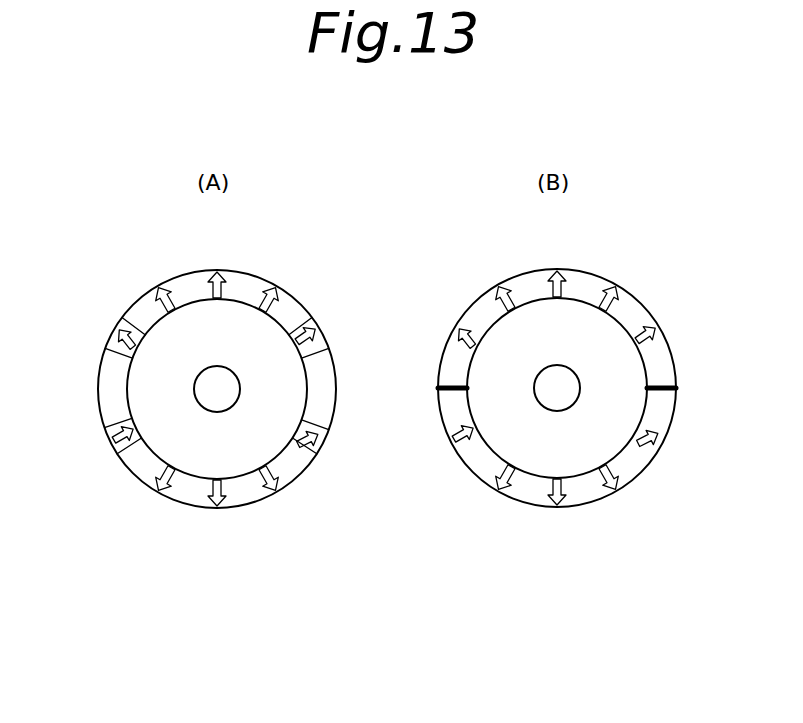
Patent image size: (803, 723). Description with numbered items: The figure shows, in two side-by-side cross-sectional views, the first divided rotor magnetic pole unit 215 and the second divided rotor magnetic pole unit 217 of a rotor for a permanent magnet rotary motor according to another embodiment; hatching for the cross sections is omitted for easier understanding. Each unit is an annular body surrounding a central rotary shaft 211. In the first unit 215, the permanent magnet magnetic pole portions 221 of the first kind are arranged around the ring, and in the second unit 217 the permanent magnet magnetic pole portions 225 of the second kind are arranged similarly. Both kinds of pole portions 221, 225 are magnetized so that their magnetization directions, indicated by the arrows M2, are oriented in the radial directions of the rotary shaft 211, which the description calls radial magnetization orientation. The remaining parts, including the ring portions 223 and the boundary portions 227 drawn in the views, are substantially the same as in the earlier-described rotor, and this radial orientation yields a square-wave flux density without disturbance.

The rotary shaft 211 is at (233, 373).
The first divided rotor magnetic pole unit 215 is at (285, 286).
The second divided rotor magnetic pole unit 217 is at (624, 285).
The permanent magnet magnetic pole portion of the first kind 221 is at (255, 283).
The annular magnet body 223 is at (112, 393).
The permanent magnet magnetic pole portion of the second kind 225 is at (592, 281).
The non-magnetized boundary portion 227 is at (449, 387).
The magnetization direction arrows M2 is at (131, 341).